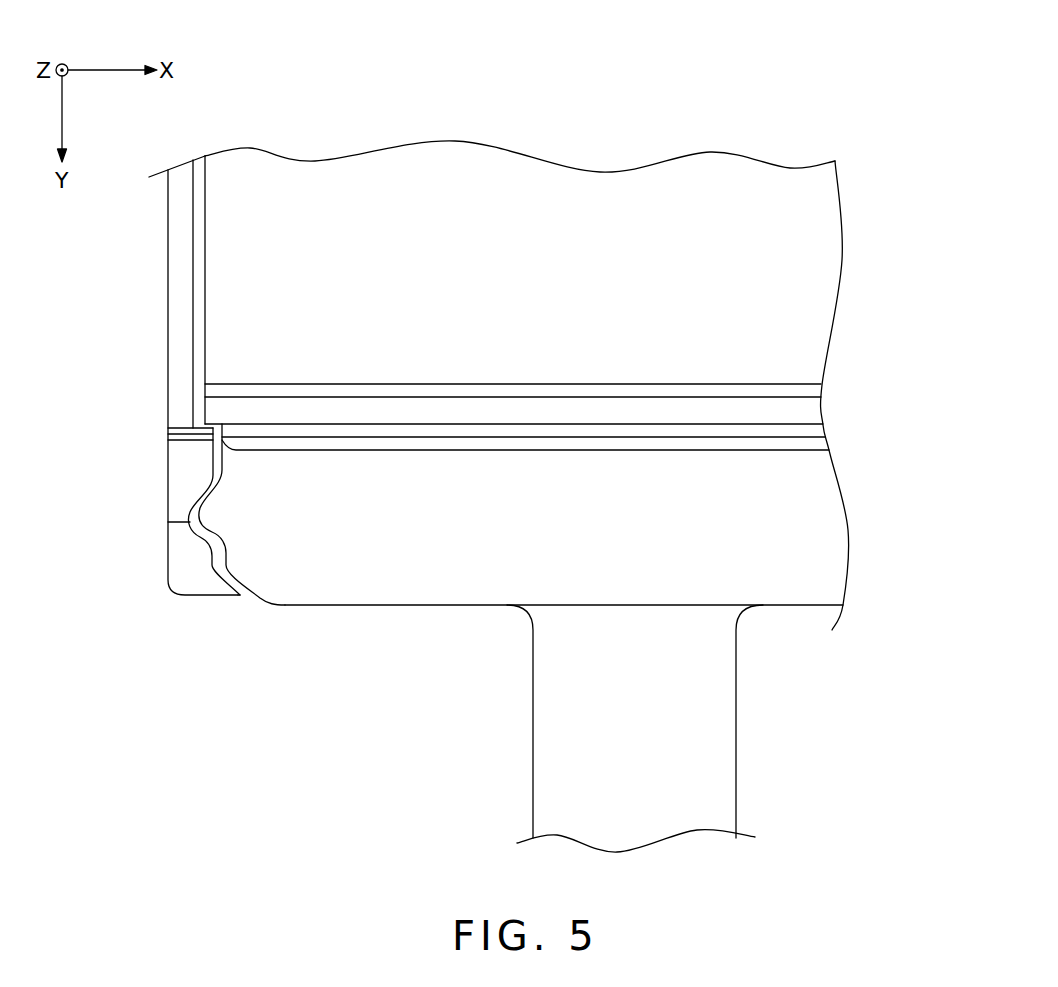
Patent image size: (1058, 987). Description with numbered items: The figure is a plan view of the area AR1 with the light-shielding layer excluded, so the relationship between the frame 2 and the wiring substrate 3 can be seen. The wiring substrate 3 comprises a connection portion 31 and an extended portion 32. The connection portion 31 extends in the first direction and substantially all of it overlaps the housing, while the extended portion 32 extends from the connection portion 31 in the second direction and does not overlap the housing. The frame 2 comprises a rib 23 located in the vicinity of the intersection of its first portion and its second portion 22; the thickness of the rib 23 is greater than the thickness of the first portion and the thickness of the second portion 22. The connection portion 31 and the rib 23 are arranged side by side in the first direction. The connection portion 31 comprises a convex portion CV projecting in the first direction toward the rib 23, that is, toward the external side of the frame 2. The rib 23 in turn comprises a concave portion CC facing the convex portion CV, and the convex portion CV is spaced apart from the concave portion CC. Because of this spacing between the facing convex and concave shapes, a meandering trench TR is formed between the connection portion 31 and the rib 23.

The frame 2 is at (165, 218).
The second portion 22 is at (183, 278).
The rib 23 is at (183, 462).
The wiring substrate 3 is at (562, 496).
The connection portion 31 is at (835, 533).
The extended portion 32 is at (722, 735).
The area AR1 is at (305, 88).
The convex portion CV is at (225, 518).
The concave portion CC is at (168, 535).
The trench TR is at (246, 610).